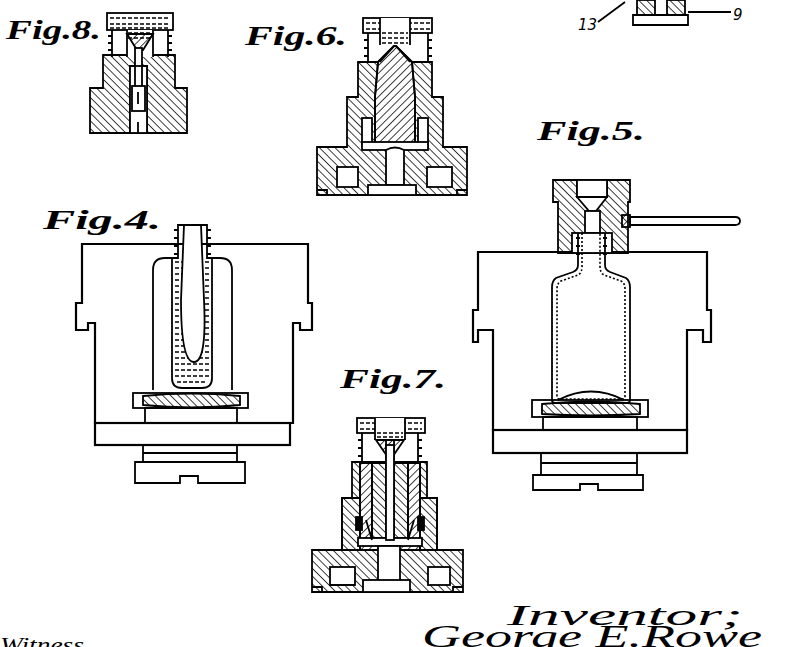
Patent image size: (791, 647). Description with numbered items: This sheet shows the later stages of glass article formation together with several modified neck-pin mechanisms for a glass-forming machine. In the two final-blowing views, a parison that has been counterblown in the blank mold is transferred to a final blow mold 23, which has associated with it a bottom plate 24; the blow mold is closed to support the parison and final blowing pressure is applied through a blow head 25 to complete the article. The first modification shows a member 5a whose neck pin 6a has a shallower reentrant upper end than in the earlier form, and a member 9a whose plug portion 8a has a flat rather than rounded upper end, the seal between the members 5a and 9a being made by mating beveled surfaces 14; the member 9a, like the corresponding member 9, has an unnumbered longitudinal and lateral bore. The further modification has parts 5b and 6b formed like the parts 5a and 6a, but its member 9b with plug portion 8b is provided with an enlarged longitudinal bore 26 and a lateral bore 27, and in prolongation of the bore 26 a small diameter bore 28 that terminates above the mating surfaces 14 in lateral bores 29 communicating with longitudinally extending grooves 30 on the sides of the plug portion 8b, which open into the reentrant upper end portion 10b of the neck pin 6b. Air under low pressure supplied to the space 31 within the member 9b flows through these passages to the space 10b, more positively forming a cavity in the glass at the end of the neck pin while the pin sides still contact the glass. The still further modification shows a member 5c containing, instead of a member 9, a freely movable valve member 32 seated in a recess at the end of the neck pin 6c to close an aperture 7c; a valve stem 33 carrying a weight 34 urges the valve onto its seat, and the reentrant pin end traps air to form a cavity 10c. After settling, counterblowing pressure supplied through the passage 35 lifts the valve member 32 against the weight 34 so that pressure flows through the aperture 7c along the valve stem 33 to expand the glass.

In FIG. 6, the member 5a is at (468, 157).
In FIG. 7, the member 5b is at (463, 563).
In FIG. 8, the member 5c is at (187, 122).
In FIG. 6, the neck pin 6a is at (412, 53).
In FIG. 7, the neck pin 6b is at (413, 450).
In FIG. 8, the neck pin 6c is at (168, 50).
In FIG. 8, the aperture 7c is at (150, 66).
In FIG. 6, the plug portion 8a is at (390, 58).
In FIG. 7, the plug portion 8b is at (362, 450).
In FIG. 8, the member 9 is at (162, 0).
In FIG. 6, the member 9 is at (415, 0).
In FIG. 6, the member 9a is at (432, 195).
In FIG. 7, the member 9b is at (348, 593).
In FIG. 7, the reentrant upper end portion 10b is at (397, 438).
In FIG. 8, the cavity 10c is at (113, 48).
In FIG. 6, the mating beveled surfaces 14 is at (420, 77).
In FIG. 7, the mating beveled surfaces 14 is at (402, 476).
In FIG. 5, the final blow mold 23 is at (687, 270).
In FIG. 4, the final blow mold 23 is at (295, 272).
In FIG. 5, the bottom plate 24 is at (640, 408).
In FIG. 4, the bottom plate 24 is at (140, 402).
In FIG. 5, the blow head 25 is at (628, 190).
In FIG. 7, the enlarged longitudinal bore 26 is at (373, 595).
In FIG. 7, the lateral bore 27 is at (408, 540).
In FIG. 7, the small diameter bore 28 is at (438, 510).
In FIG. 7, the lateral bores 29 is at (383, 478).
In FIG. 7, the longitudinally extending grooves 30 is at (398, 467).
In FIG. 7, the space 31 is at (397, 587).
In FIG. 8, the valve member 32 is at (112, 67).
In FIG. 8, the valve stem 33 is at (138, 79).
In FIG. 8, the weight 34 is at (137, 100).
In FIG. 8, the passage 35 is at (137, 128).